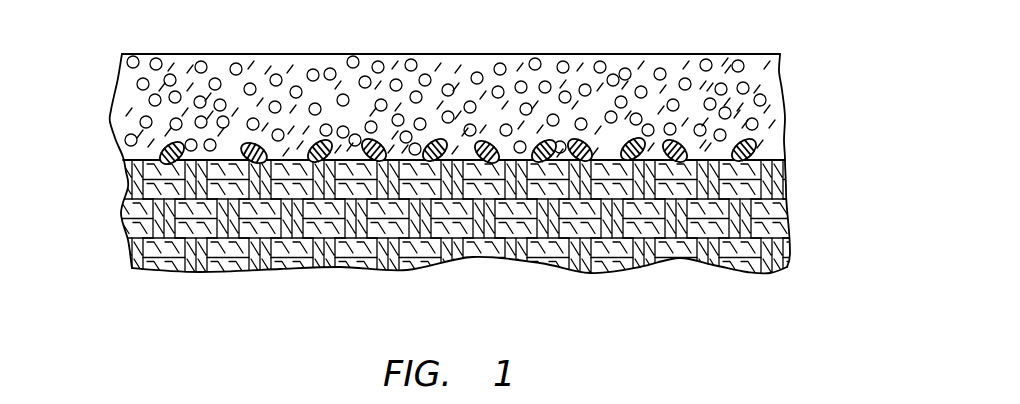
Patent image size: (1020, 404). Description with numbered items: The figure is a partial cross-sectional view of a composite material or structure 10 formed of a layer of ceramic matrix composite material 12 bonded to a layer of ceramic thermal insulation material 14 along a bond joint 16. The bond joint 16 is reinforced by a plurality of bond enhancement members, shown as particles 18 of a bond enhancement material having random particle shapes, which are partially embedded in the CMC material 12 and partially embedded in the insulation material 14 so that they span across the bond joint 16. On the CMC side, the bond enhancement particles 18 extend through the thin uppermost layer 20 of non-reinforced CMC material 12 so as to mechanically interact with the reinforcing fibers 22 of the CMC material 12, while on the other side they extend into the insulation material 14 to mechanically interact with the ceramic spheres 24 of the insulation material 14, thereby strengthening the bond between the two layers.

The composite material 10 is at (127, 23).
The ceramic matrix composite material 12 is at (783, 235).
The ceramic thermal insulation material 14 is at (780, 78).
The bond joint 16 is at (783, 155).
The bond enhancement particles 18 is at (618, 146).
The uppermost layer 20 is at (124, 161).
The reinforcing fibers 22 is at (217, 223).
The ceramic spheres 24 is at (176, 124).